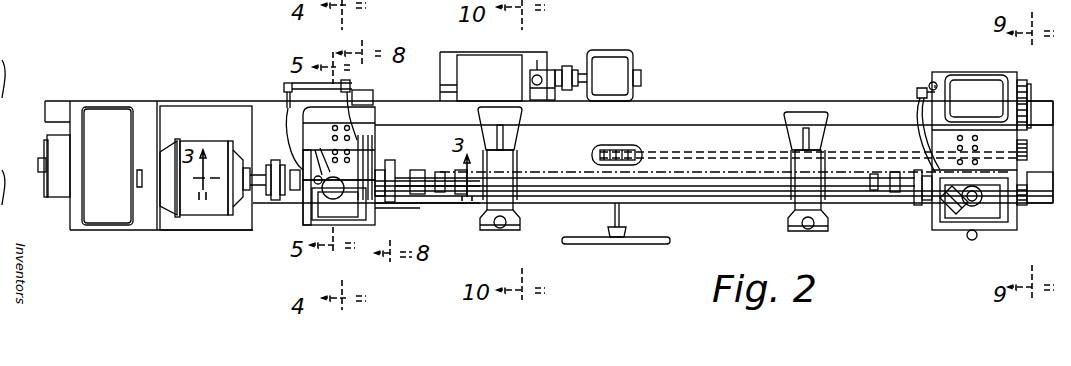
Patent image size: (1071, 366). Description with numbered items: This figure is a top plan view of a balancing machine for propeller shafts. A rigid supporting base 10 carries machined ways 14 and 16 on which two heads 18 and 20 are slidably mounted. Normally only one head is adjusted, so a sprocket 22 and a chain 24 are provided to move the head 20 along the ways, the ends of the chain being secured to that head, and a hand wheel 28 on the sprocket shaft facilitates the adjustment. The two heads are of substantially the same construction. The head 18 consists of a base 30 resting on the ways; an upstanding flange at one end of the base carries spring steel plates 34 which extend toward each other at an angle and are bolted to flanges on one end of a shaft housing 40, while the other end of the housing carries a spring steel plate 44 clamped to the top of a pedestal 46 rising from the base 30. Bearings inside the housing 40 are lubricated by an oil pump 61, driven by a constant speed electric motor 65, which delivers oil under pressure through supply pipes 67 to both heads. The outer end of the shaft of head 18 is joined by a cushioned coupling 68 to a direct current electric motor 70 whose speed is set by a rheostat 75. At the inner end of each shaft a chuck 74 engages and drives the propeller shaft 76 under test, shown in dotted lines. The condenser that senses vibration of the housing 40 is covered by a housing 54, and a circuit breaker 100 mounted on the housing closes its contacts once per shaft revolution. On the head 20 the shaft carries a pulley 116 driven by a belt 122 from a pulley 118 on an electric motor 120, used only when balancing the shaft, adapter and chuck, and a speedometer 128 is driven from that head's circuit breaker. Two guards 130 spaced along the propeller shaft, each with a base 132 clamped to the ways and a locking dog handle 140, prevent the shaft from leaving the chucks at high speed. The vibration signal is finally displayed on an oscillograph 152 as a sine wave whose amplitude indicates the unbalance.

The supporting base 10 is at (740, 118).
The ways 14 is at (708, 192).
The ways 16 is at (688, 118).
The head 18 is at (292, 226).
The head 20 is at (931, 232).
The sprocket 22 is at (630, 148).
The chain 24 is at (758, 150).
The hand wheel 28 is at (640, 245).
The base 30 is at (412, 208).
The spring steel plates 34 is at (282, 165).
The shaft housing 40 is at (300, 192).
The spring steel plate 44 is at (372, 143).
The pedestal 46 is at (370, 128).
The housing 54 is at (350, 212).
The oil pump 61 is at (545, 68).
The electric motor 65 is at (607, 60).
The supply pipes 67 is at (284, 86).
The coupling 68 is at (266, 163).
The electric motor 70 is at (212, 150).
The chuck 74 is at (393, 170).
The rheostat 75 is at (40, 163).
The propeller shaft 76 is at (648, 203).
The circuit breaker 100 is at (378, 208).
The pulley 116 is at (1025, 206).
The pulley 118 is at (1027, 88).
The electric motor 120 is at (970, 78).
The belt 122 is at (1028, 130).
The speedometer 128 is at (958, 218).
The guards 130 is at (505, 206).
The base 132 is at (520, 145).
The handle 140 is at (986, 215).
The oscillograph 152 is at (104, 116).